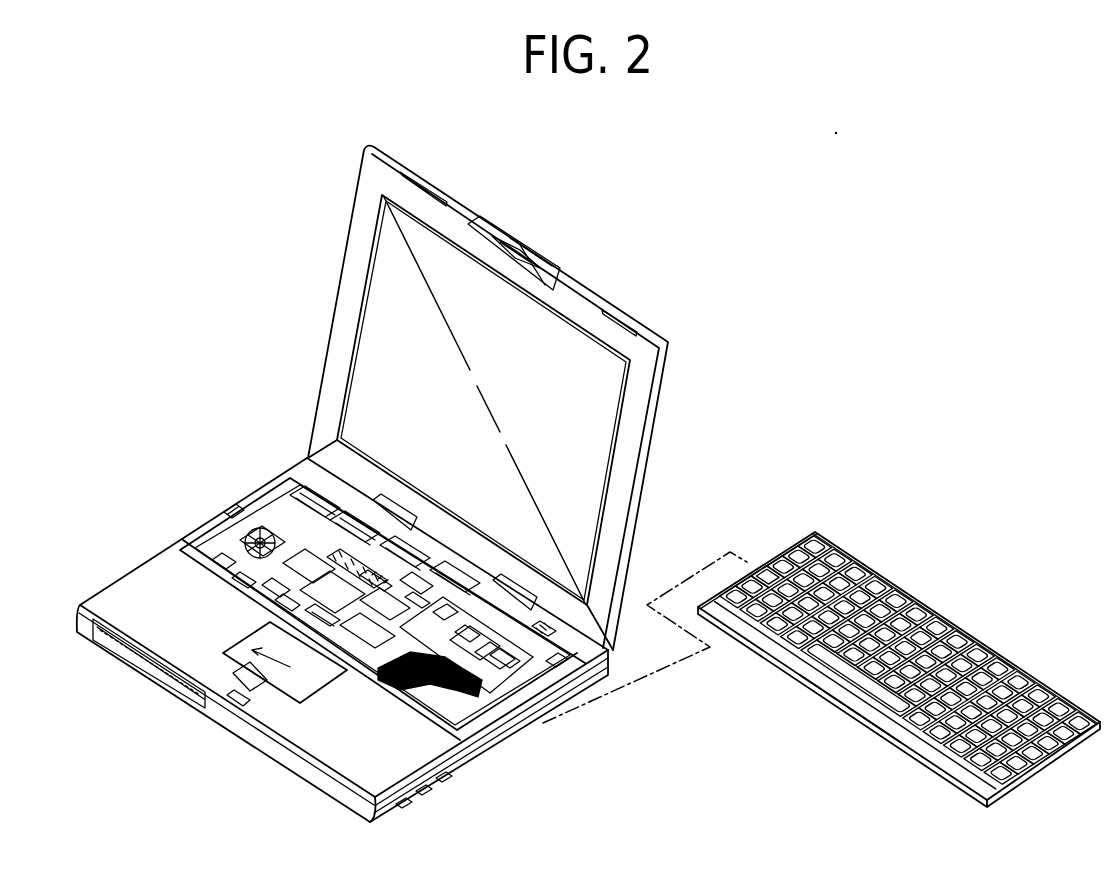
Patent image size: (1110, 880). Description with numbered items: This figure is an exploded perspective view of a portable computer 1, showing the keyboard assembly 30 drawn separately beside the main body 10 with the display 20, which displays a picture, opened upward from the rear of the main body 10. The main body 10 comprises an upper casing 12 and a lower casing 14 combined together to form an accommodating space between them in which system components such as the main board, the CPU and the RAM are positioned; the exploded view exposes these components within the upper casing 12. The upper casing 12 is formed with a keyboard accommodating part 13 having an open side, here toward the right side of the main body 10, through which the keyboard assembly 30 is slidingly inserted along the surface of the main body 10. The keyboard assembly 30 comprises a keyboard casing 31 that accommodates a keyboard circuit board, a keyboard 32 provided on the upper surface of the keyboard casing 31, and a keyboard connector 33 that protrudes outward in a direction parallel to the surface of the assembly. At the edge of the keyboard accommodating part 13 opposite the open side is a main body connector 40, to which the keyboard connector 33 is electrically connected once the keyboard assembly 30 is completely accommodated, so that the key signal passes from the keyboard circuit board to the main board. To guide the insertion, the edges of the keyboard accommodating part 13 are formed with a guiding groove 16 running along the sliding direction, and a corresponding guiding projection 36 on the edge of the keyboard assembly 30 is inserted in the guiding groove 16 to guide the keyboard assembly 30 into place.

The portable computer 1 is at (598, 263).
The main body 10 is at (177, 540).
The upper casing 12 is at (428, 780).
The keyboard accommodating part 13 is at (275, 478).
The lower casing 14 is at (487, 755).
The guiding groove 16 is at (548, 663).
The display 20 is at (658, 443).
The keyboard assembly 30 is at (905, 572).
The keyboard casing 31 is at (1033, 768).
The keyboard 32 is at (927, 765).
The keyboard connector 33 is at (763, 573).
The guiding projection 36 is at (857, 717).
The main body connector 40 is at (232, 512).